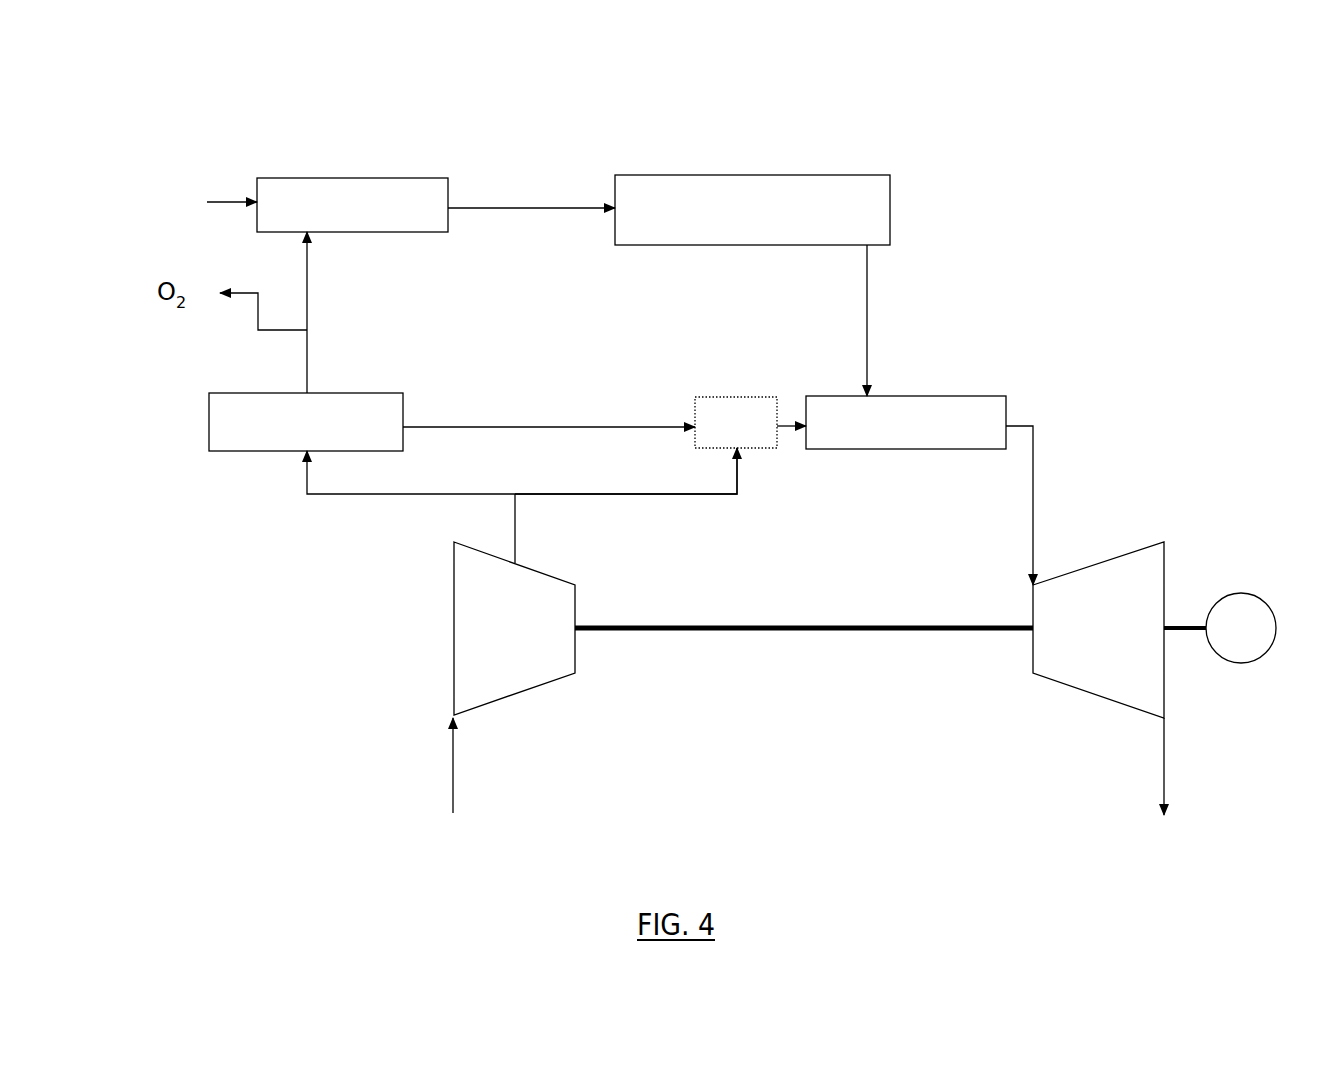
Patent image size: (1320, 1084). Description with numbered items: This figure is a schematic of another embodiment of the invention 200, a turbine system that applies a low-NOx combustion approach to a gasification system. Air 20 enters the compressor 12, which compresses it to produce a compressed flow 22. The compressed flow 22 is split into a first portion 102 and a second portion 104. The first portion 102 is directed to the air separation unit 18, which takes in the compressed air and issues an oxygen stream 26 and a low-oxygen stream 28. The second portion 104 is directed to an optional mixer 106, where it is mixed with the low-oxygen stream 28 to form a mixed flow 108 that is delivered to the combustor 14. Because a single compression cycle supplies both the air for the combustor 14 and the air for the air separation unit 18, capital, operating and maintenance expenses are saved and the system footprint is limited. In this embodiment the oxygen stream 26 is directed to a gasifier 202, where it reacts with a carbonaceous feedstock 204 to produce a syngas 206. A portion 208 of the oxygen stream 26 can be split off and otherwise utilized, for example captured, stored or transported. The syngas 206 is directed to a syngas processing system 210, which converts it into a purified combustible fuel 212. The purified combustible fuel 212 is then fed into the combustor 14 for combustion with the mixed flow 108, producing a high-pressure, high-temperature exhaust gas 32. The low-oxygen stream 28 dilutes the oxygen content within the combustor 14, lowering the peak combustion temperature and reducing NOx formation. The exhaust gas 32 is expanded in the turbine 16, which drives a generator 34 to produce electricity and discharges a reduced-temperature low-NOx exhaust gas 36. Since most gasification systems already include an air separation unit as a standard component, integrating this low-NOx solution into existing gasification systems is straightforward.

The embodiment of the invention 200 is at (190, 82).
The gasifier 202 is at (366, 217).
The carbonaceous feedstock 204 is at (205, 201).
The syngas 206 is at (531, 190).
The portion of oxygen stream 208 is at (263, 295).
The syngas processing system 210 is at (756, 225).
The purified combustible fuel 212 is at (894, 320).
The oxygen stream 26 is at (329, 312).
The low-oxygen stream 28 is at (549, 410).
The mixer 106 is at (755, 436).
The mixed flow 108 is at (789, 424).
The combustor 14 is at (920, 436).
The air separation unit 18 is at (319, 436).
The first portion 102 is at (522, 471).
The second portion 104 is at (626, 471).
The compressed flow 22 is at (536, 528).
The compressor 12 is at (527, 645).
The turbine 16 is at (1114, 635).
The air 20 is at (453, 786).
The exhaust gas 32 is at (1040, 505).
The generator 34 is at (1240, 593).
The low-NOx exhaust gas 36 is at (1168, 787).